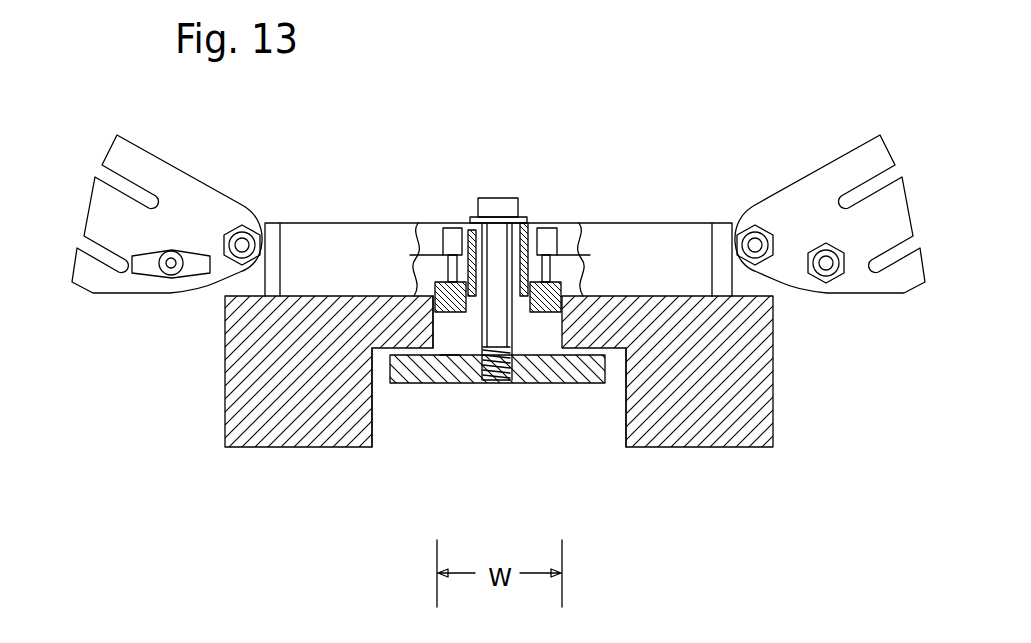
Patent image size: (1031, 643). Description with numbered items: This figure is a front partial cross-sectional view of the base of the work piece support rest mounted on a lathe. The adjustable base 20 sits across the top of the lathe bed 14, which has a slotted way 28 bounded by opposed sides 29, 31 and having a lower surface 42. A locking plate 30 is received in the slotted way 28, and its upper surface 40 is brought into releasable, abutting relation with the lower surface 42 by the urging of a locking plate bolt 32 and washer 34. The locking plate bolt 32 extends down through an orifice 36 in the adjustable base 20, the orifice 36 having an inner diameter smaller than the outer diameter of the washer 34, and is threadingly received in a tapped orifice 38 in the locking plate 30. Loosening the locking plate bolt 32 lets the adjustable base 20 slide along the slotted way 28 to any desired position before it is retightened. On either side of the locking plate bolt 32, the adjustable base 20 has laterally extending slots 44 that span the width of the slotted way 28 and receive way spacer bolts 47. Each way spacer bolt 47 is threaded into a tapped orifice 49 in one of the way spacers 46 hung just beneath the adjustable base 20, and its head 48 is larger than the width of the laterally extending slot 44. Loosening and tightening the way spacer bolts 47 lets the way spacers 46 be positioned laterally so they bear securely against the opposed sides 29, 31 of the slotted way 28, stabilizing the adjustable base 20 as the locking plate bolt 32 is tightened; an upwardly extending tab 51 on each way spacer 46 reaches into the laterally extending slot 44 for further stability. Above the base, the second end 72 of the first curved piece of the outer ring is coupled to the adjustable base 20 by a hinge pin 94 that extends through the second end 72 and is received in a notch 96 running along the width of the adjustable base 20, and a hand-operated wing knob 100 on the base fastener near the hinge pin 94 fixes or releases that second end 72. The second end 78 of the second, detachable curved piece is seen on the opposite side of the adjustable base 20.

The lathe bed 14 is at (775, 342).
The adjustable base 20 is at (650, 222).
The slotted way 28 is at (593, 405).
The opposed side of the slotted way 29 is at (558, 383).
The locking plate 30 is at (405, 385).
The opposed side of the slotted way 31 is at (448, 383).
The locking plate bolt 32 is at (497, 230).
The washer 34 is at (470, 230).
The orifice 36 is at (507, 230).
The tapped orifice 38 is at (500, 385).
The upper surface 40 is at (422, 383).
The lower surface 42 is at (375, 350).
The laterally extending slots 44 is at (438, 280).
The way spacers 46 is at (528, 300).
The way spacer bolts 47 is at (447, 232).
The head 48 is at (428, 230).
The tapped orifices 49 is at (470, 300).
The upwardly extending tab 51 is at (412, 277).
The second end 72 is at (187, 198).
The second end 78 is at (865, 226).
The hinge pin 94 is at (170, 273).
The notch 96 is at (247, 245).
The wing knob 100 is at (142, 268).